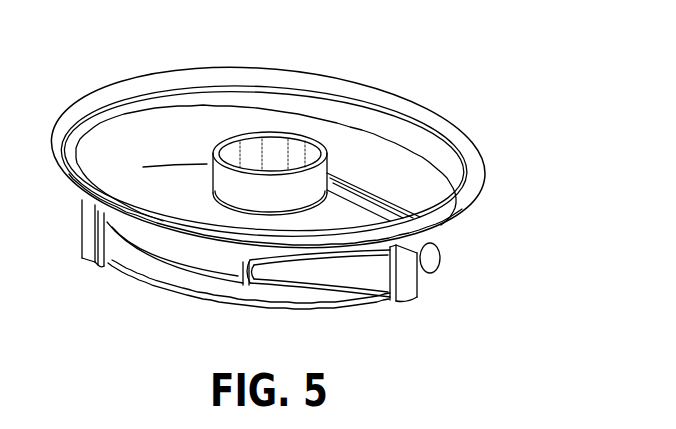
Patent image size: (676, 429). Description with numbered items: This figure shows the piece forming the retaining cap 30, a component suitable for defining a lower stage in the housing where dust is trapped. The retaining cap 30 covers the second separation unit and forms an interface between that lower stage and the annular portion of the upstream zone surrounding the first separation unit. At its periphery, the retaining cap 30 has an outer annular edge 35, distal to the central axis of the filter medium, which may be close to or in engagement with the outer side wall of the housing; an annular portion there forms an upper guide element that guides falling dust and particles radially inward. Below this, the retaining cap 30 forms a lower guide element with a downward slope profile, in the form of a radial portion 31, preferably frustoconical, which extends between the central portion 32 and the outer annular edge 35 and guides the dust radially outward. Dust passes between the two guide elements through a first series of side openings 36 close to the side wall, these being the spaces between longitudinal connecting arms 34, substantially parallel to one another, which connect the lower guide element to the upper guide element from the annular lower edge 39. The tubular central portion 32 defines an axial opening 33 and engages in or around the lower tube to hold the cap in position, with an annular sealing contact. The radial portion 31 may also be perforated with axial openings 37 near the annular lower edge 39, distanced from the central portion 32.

The retaining cap 30 is at (495, 121).
The radial portion 31 is at (337, 193).
The central portion 32 is at (250, 150).
The axial opening 33 is at (290, 140).
The longitudinal connecting arms 34 is at (408, 275).
The outer annular edge 35 is at (98, 106).
The side openings 36 is at (153, 133).
The axial openings 37 is at (150, 248).
The annular lower edge 39 is at (346, 302).